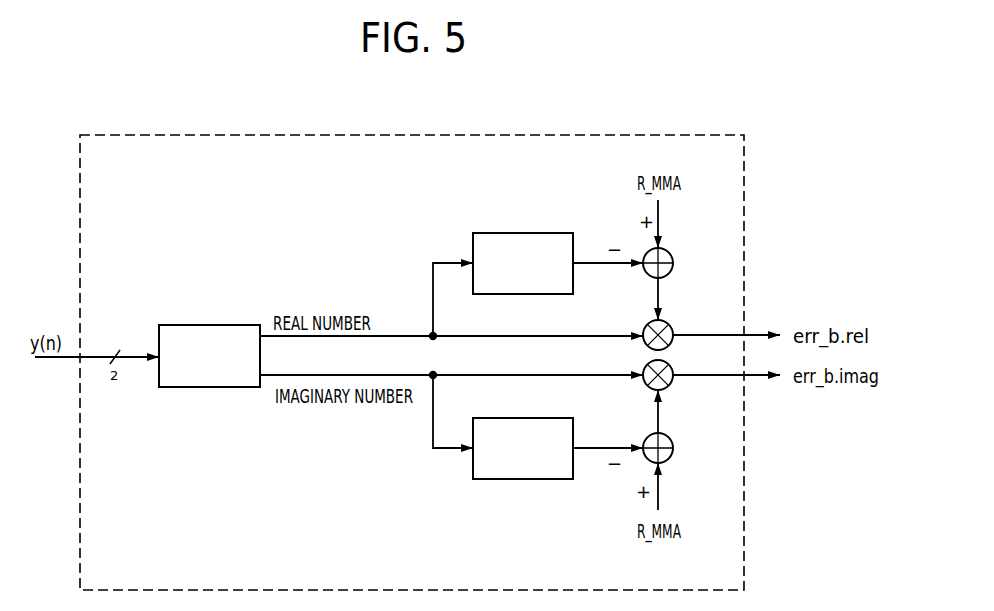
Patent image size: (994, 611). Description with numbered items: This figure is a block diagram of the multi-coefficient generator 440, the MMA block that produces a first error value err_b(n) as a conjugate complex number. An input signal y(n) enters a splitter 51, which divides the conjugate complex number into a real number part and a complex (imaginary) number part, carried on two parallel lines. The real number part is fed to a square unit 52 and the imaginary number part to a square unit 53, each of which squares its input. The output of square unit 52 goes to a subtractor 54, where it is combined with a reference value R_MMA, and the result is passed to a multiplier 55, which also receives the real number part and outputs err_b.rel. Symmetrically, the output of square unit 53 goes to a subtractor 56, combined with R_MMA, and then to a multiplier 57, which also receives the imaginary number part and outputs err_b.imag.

The multi-coefficient generator 440 is at (703, 135).
The splitter 51 is at (220, 325).
The square unit 52 is at (533, 233).
The square unit 53 is at (533, 418).
The subtractor 54 is at (669, 252).
The multiplier 55 is at (669, 324).
The subtractor 56 is at (669, 459).
The multiplier 57 is at (669, 386).